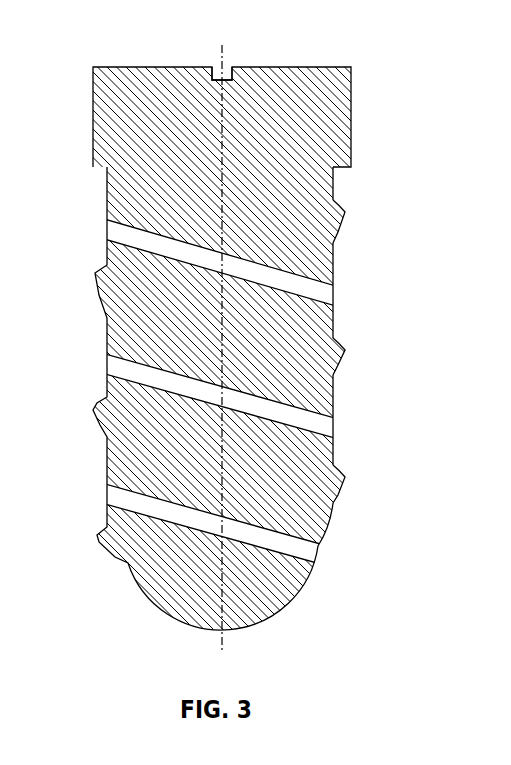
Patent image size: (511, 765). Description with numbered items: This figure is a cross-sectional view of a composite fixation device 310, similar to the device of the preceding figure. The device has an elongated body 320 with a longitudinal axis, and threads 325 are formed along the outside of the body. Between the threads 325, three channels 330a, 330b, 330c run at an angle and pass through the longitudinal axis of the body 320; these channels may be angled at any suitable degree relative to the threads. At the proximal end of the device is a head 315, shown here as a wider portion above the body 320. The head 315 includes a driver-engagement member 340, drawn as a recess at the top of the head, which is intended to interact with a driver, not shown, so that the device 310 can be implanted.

The composite fixation device 310 is at (98, 45).
The head 315 is at (351, 92).
The body 320 is at (107, 316).
The threads 325 is at (345, 212).
The channel 330a is at (327, 293).
The channel 330b is at (328, 428).
The channel 330c is at (310, 553).
The driver-engagement member 340 is at (227, 70).